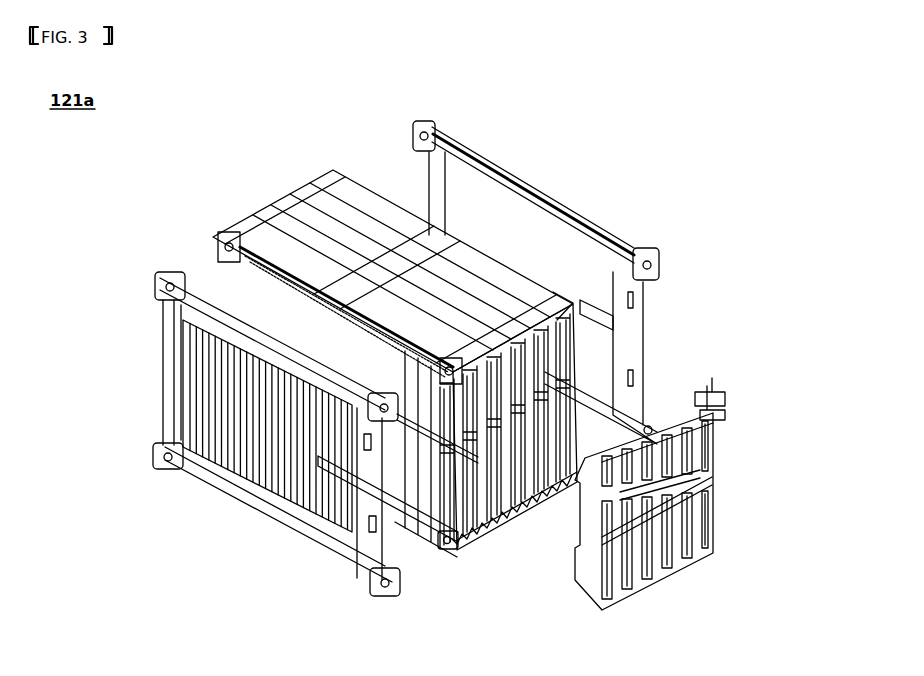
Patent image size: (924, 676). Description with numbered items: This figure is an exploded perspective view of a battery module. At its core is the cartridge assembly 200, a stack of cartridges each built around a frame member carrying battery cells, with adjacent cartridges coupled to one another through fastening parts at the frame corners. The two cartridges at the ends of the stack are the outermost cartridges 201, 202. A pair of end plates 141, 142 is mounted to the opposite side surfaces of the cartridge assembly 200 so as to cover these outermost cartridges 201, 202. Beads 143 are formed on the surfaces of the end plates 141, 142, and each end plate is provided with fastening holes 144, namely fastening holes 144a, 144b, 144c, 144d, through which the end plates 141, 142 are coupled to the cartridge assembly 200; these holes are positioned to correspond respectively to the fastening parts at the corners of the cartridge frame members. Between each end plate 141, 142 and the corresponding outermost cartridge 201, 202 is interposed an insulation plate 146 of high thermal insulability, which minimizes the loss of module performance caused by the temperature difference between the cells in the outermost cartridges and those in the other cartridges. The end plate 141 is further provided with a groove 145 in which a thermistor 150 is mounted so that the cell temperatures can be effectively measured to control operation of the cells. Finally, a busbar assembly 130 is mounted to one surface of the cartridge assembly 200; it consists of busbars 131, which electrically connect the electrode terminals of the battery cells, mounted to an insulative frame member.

The cartridge assembly 200 is at (366, 351).
The outermost cartridge 201 is at (306, 381).
The outermost cartridge 202 is at (370, 203).
The end plate 141 is at (212, 434).
The end plate 142 is at (561, 281).
The beads 143 is at (200, 424).
The fastening holes 144 is at (225, 434).
The fastening hole 144a is at (160, 297).
The fastening hole 144b is at (153, 458).
The fastening hole 144c is at (387, 410).
The fastening hole 144d is at (385, 583).
The groove 145 is at (367, 480).
The insulation plate 146 is at (567, 263).
The thermistor 150 is at (475, 450).
The busbar assembly 130 is at (694, 494).
The busbars 131 is at (707, 527).